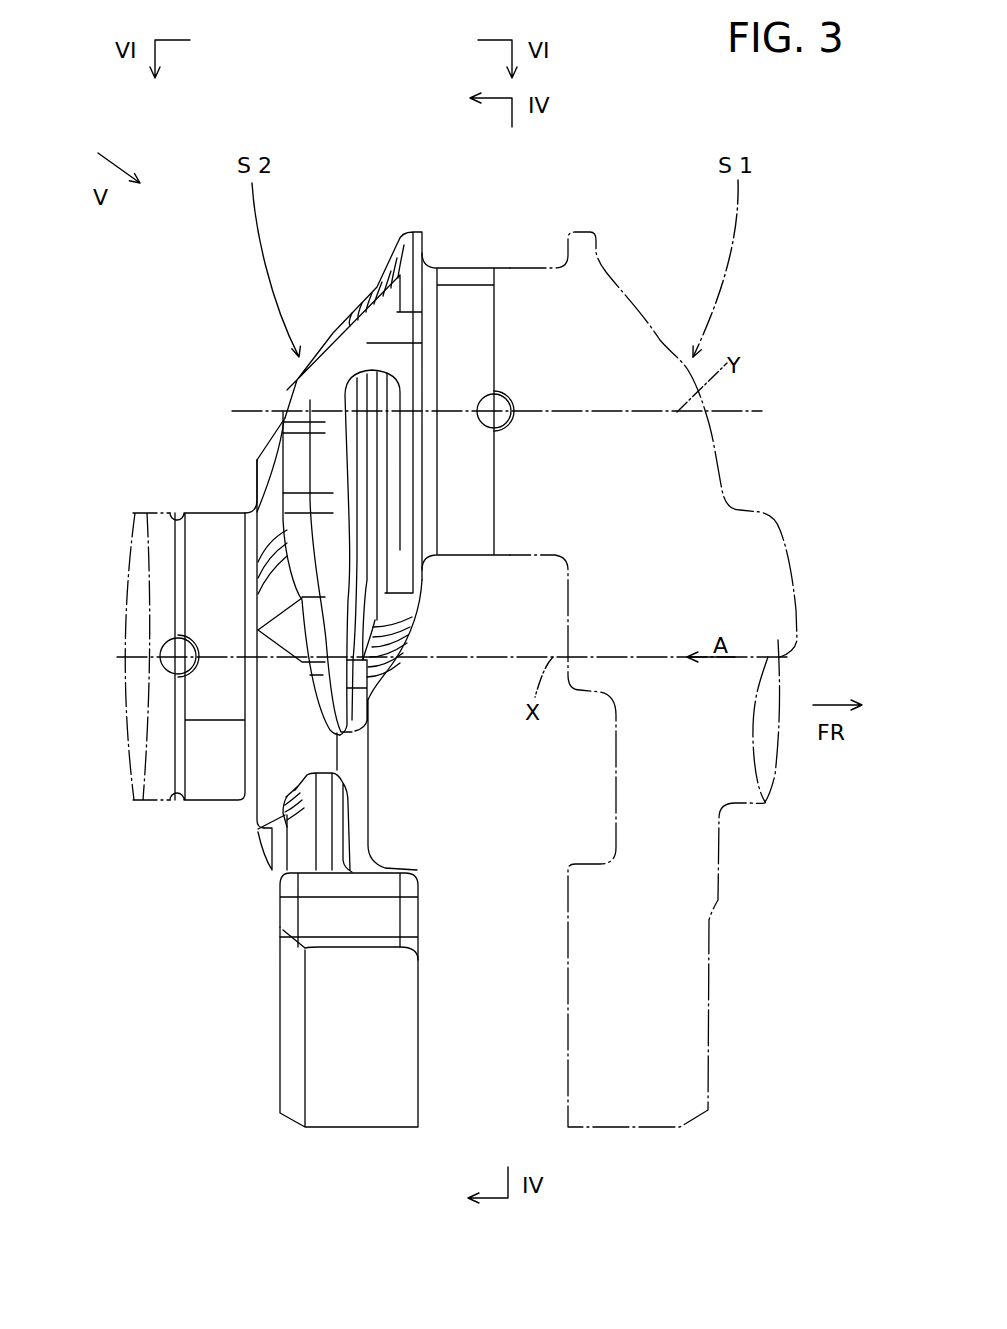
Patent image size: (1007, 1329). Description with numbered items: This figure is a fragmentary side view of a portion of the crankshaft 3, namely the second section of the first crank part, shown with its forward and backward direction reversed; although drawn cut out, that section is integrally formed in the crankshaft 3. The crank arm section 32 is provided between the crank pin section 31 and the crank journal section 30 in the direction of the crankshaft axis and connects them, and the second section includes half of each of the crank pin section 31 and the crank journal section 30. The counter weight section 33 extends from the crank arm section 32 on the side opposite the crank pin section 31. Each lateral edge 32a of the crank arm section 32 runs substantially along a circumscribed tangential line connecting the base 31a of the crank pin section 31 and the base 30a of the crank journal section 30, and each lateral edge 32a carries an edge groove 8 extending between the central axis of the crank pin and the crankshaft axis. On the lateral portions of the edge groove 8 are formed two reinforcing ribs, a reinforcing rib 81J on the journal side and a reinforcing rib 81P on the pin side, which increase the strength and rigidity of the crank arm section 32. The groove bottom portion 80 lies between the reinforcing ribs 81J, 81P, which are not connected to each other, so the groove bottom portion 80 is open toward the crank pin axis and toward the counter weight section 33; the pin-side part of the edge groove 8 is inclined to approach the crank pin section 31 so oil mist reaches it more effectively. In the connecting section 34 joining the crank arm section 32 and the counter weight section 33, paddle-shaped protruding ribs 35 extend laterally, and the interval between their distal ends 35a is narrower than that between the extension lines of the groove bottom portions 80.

The crankshaft 3 is at (635, 128).
The edge groove 8 is at (357, 537).
The crank journal section 30 is at (210, 496).
The base of the crank journal section 30a is at (257, 460).
The crank pin section 31 is at (462, 246).
The base of the crank pin section 31a is at (413, 232).
The crank arm section 32 is at (245, 437).
The lateral edges of the crank arm section 32a is at (297, 460).
The counter weight section 33 is at (278, 1023).
The connecting section 34 is at (274, 868).
The protruding ribs 35 is at (308, 835).
The distal ends of the protruding ribs 35a is at (322, 818).
The groove bottom portion 80 is at (360, 578).
The reinforcing rib on the crank journal side 81J is at (320, 428).
The reinforcing rib on the crank pin side 81P is at (398, 493).